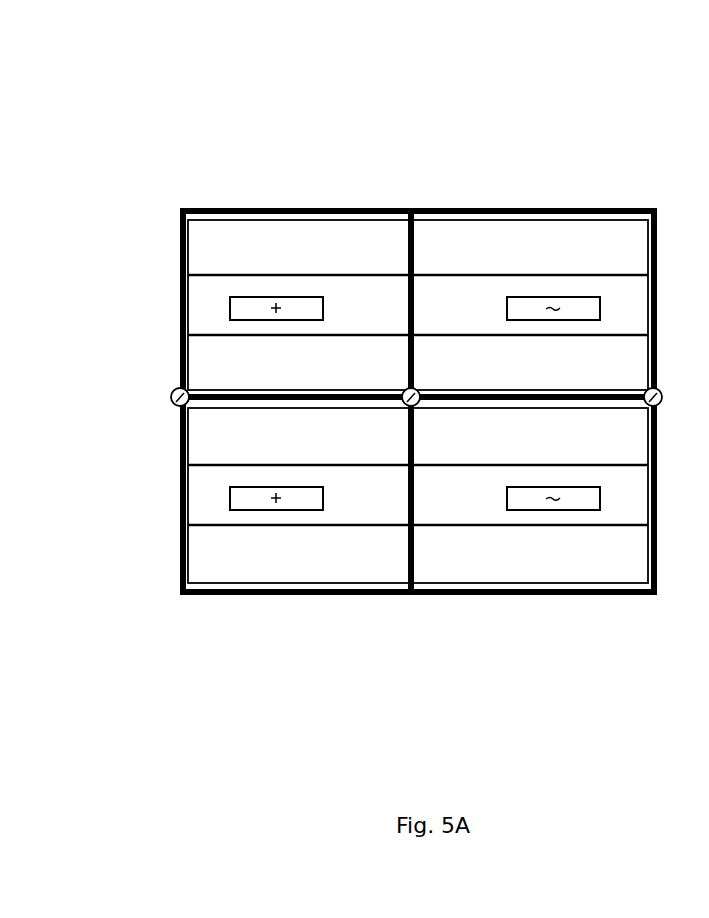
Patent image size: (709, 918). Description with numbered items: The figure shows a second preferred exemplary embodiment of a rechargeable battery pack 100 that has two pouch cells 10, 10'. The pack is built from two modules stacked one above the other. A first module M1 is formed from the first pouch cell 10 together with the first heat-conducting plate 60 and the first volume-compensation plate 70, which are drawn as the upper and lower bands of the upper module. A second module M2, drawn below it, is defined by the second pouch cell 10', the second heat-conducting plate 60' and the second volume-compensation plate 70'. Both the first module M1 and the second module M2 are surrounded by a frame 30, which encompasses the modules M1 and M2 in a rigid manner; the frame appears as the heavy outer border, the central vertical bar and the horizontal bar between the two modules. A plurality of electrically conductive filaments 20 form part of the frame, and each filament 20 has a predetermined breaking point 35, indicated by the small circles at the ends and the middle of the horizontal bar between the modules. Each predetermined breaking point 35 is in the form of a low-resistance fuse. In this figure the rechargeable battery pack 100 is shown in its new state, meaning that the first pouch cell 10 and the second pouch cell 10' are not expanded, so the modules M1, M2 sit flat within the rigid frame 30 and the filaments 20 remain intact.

The rechargeable battery pack 100 is at (521, 78).
The first pouch cell 10 is at (403, 305).
The second pouch cell 10' is at (400, 495).
The electrically conductive filaments 20 is at (405, 262).
The frame 30 is at (463, 393).
The predetermined breaking point 35 is at (171, 397).
The first heat-conducting plate 60 is at (418, 206).
The second heat-conducting plate 60' is at (383, 435).
The first volume-compensation plate 70 is at (374, 362).
The second volume-compensation plate 70' is at (372, 566).
The first module M1 is at (137, 190).
The second module M2 is at (171, 630).